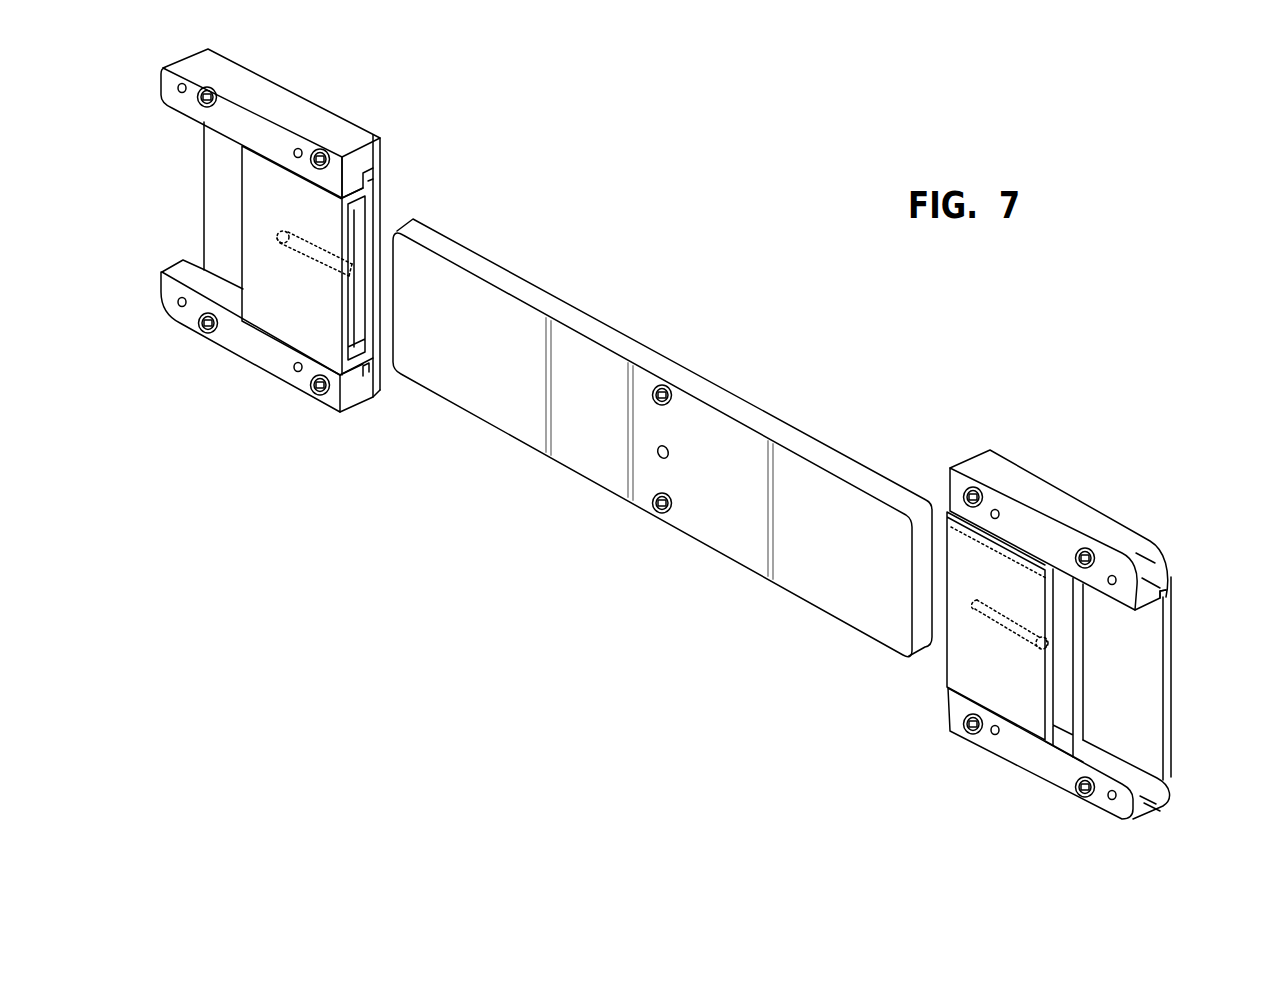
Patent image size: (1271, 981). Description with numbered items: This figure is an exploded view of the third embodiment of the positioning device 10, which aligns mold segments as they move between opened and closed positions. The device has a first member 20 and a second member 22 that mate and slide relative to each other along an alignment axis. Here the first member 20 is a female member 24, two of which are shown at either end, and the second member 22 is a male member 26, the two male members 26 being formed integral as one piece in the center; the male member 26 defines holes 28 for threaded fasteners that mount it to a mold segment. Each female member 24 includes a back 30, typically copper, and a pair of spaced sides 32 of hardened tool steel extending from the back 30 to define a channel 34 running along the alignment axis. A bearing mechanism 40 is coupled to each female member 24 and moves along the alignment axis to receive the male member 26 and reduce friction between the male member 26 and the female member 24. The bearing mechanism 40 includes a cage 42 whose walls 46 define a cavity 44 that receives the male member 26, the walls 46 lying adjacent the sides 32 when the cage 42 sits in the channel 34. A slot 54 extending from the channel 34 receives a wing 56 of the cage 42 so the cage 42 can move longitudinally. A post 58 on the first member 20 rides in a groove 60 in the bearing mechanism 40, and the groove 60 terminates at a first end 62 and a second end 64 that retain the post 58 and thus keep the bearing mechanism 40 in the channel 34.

The positioning device 10 is at (746, 324).
The first member 20 is at (375, 116).
The second member 22 is at (587, 352).
The female member 24 is at (320, 97).
The male member 26 is at (454, 357).
The holes 28 is at (671, 400).
The back 30 is at (211, 168).
The sides 32 is at (246, 134).
The channel 34 is at (221, 243).
The bearing mechanism 40 is at (306, 331).
The cage 42 is at (295, 315).
The cavity 44 is at (356, 331).
The walls 46 is at (366, 193).
The slot 54 is at (1162, 788).
The wing 56 is at (368, 182).
The post 58 is at (285, 236).
The groove 60 is at (301, 266).
The first end 62 is at (276, 236).
The second end 64 is at (356, 272).